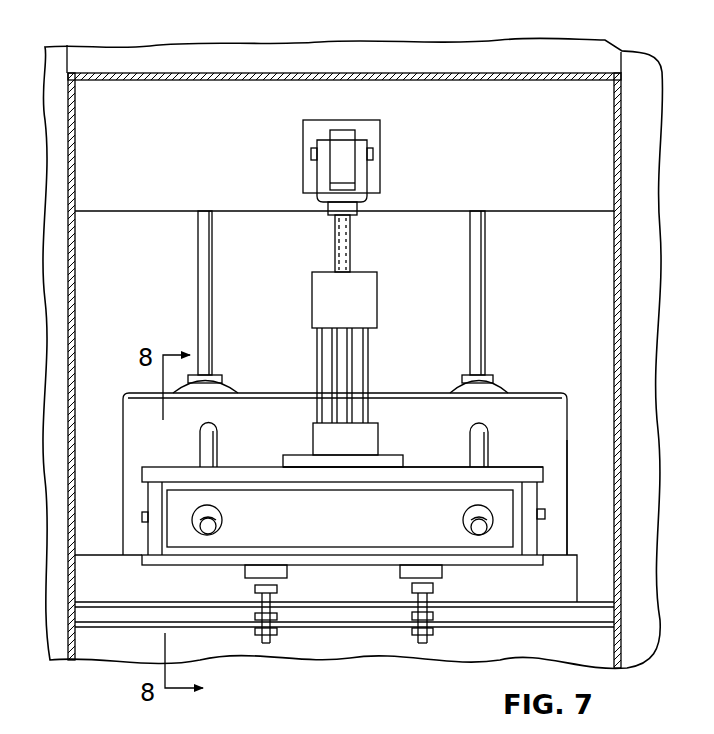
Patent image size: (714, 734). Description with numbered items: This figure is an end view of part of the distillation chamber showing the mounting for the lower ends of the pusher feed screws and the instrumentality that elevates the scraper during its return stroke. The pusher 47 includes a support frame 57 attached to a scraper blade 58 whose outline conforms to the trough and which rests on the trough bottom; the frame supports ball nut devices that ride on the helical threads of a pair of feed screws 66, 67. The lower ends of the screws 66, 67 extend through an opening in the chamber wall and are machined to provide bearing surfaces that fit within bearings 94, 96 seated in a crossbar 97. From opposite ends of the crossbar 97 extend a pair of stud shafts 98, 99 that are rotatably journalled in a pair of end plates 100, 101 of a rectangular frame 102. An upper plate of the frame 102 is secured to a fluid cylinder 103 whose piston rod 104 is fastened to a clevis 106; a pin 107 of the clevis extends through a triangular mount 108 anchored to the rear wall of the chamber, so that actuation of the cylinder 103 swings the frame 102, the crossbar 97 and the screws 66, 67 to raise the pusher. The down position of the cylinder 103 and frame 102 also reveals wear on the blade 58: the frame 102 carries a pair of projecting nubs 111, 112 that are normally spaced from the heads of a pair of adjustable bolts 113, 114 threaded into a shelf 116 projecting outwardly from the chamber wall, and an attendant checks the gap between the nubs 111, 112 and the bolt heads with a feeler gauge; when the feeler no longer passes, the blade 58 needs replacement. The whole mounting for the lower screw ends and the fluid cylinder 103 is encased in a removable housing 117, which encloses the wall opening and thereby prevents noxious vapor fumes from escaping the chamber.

The removable housing 117 is at (522, 73).
The triangular mount 108 is at (335, 135).
The pin 107 is at (373, 152).
The clevis 106 is at (322, 173).
The piston rod 104 is at (350, 247).
The feed screw 66 is at (198, 262).
The feed screw 67 is at (488, 260).
The fluid cylinder 103 is at (337, 355).
The pusher 47 is at (538, 388).
The rectangular frame 102 is at (522, 465).
The support frame 57 is at (568, 462).
The crossbar 97 is at (285, 495).
The end plate 100 is at (148, 493).
The stud shaft 98 is at (142, 515).
The stud shaft 99 is at (545, 508).
The bearing 94 is at (223, 522).
The bearing 96 is at (463, 520).
The end plate 101 is at (538, 532).
The scraper blade 58 is at (578, 574).
The projecting nub 111 is at (243, 575).
The projecting nub 112 is at (440, 573).
The adjustable bolt 113 is at (279, 590).
The adjustable bolt 114 is at (411, 587).
The shelf 116 is at (335, 625).